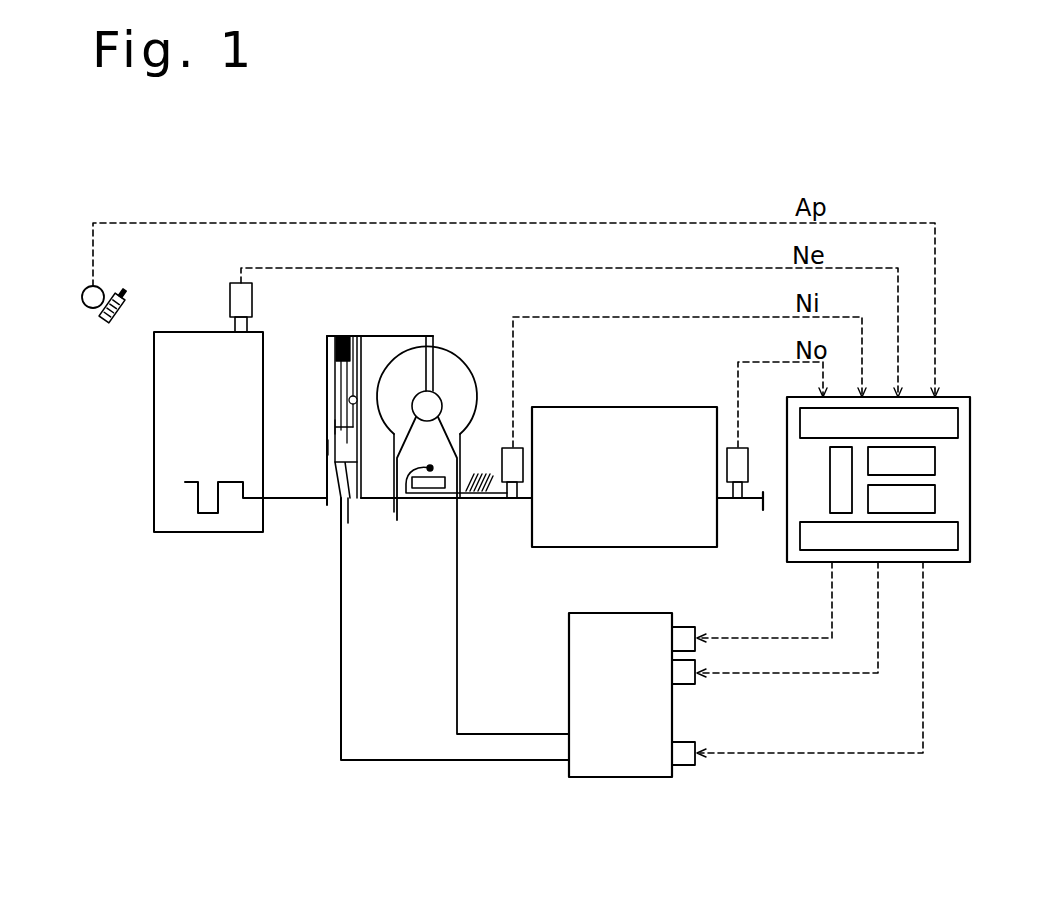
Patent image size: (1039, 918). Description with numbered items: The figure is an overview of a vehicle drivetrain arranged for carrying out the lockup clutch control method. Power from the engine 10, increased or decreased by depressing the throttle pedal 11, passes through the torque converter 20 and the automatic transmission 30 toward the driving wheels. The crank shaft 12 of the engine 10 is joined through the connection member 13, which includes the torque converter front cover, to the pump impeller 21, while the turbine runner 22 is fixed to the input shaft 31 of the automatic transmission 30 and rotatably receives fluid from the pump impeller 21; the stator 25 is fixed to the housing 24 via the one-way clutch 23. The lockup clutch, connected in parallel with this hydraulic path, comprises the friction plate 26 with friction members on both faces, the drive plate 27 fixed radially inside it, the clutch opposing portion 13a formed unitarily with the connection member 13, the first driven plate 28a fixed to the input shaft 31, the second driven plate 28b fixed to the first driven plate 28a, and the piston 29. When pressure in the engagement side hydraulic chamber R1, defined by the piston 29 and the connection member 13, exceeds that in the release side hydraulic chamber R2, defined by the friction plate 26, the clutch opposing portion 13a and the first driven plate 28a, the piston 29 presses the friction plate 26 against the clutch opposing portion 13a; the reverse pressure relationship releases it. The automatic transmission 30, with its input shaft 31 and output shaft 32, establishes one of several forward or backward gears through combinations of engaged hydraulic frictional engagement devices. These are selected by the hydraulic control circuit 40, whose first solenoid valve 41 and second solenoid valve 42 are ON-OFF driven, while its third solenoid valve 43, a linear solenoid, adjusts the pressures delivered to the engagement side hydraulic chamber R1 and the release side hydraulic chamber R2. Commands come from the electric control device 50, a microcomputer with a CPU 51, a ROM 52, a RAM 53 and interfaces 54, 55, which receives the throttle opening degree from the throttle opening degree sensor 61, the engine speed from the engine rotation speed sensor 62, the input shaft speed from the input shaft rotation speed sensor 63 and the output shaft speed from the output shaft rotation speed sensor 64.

The engine 10 is at (153, 438).
The throttle pedal 11 is at (119, 292).
The crank shaft 12 is at (290, 502).
The connection member 13 is at (327, 340).
The clutch opposing portion 13a is at (358, 335).
The torque converter 20 is at (465, 502).
The pump impeller 21 is at (446, 348).
The turbine runner 22 is at (367, 336).
The one-way clutch 23 is at (427, 500).
The housing 24 is at (471, 475).
The stator 25 is at (403, 500).
The friction plate 26 is at (338, 336).
The drive plate 27 is at (335, 360).
The first driven plate 28a is at (335, 477).
The second driven plate 28b is at (335, 427).
The piston 29 is at (347, 395).
The automatic transmission 30 is at (650, 406).
The input shaft 31 is at (497, 503).
The output shaft 32 is at (735, 503).
The hydraulic control circuit 40 is at (624, 700).
The first solenoid valve 41 is at (682, 623).
The second solenoid valve 42 is at (682, 685).
The third solenoid valve 43 is at (682, 767).
The electric control device 50 is at (903, 452).
The CPU 51 is at (830, 490).
The ROM 52 is at (935, 462).
The RAM 53 is at (935, 497).
The interface 54 is at (958, 422).
The interface 55 is at (958, 535).
The throttle opening degree sensor 61 is at (84, 293).
The engine rotation speed sensor 62 is at (230, 298).
The input shaft rotation speed sensor 63 is at (505, 447).
The output shaft rotation speed sensor 64 is at (748, 467).
The engagement side hydraulic chamber R1 is at (321, 449).
The release side hydraulic chamber R2 is at (377, 483).